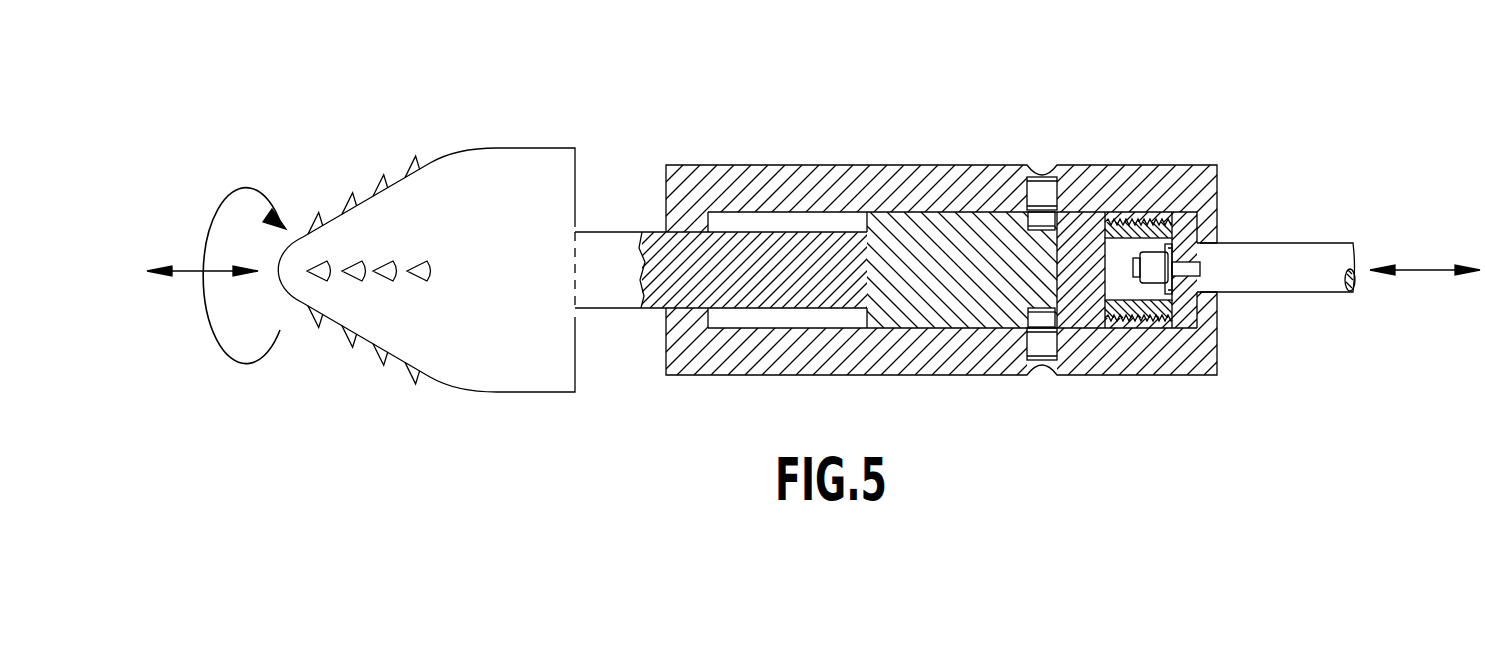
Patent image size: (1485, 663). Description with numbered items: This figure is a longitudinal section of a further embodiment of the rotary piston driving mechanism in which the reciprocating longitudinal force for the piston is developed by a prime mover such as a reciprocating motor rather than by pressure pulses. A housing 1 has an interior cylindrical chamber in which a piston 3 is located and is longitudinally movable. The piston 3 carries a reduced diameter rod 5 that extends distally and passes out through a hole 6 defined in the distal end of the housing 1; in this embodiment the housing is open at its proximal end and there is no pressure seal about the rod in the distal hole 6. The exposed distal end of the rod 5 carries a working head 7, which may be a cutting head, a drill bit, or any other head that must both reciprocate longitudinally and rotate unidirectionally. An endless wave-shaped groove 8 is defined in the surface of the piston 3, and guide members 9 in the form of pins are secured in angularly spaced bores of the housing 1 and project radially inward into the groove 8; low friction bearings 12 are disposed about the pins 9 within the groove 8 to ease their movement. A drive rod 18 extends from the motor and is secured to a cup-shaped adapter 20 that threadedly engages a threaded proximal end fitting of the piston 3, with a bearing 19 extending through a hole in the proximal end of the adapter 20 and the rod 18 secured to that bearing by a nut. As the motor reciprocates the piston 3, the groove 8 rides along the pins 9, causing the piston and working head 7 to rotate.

The housing 1 is at (760, 188).
The piston 3 is at (895, 262).
The rod 5 is at (596, 267).
The hole 6 is at (662, 228).
The working head 7 is at (440, 227).
The groove 8 is at (967, 230).
The guide members 9 is at (1042, 320).
The bearings 12 is at (1060, 225).
The drive rod 18 is at (1295, 270).
The bearing 19 is at (1200, 250).
The cup-shaped adapter 20 is at (1132, 218).